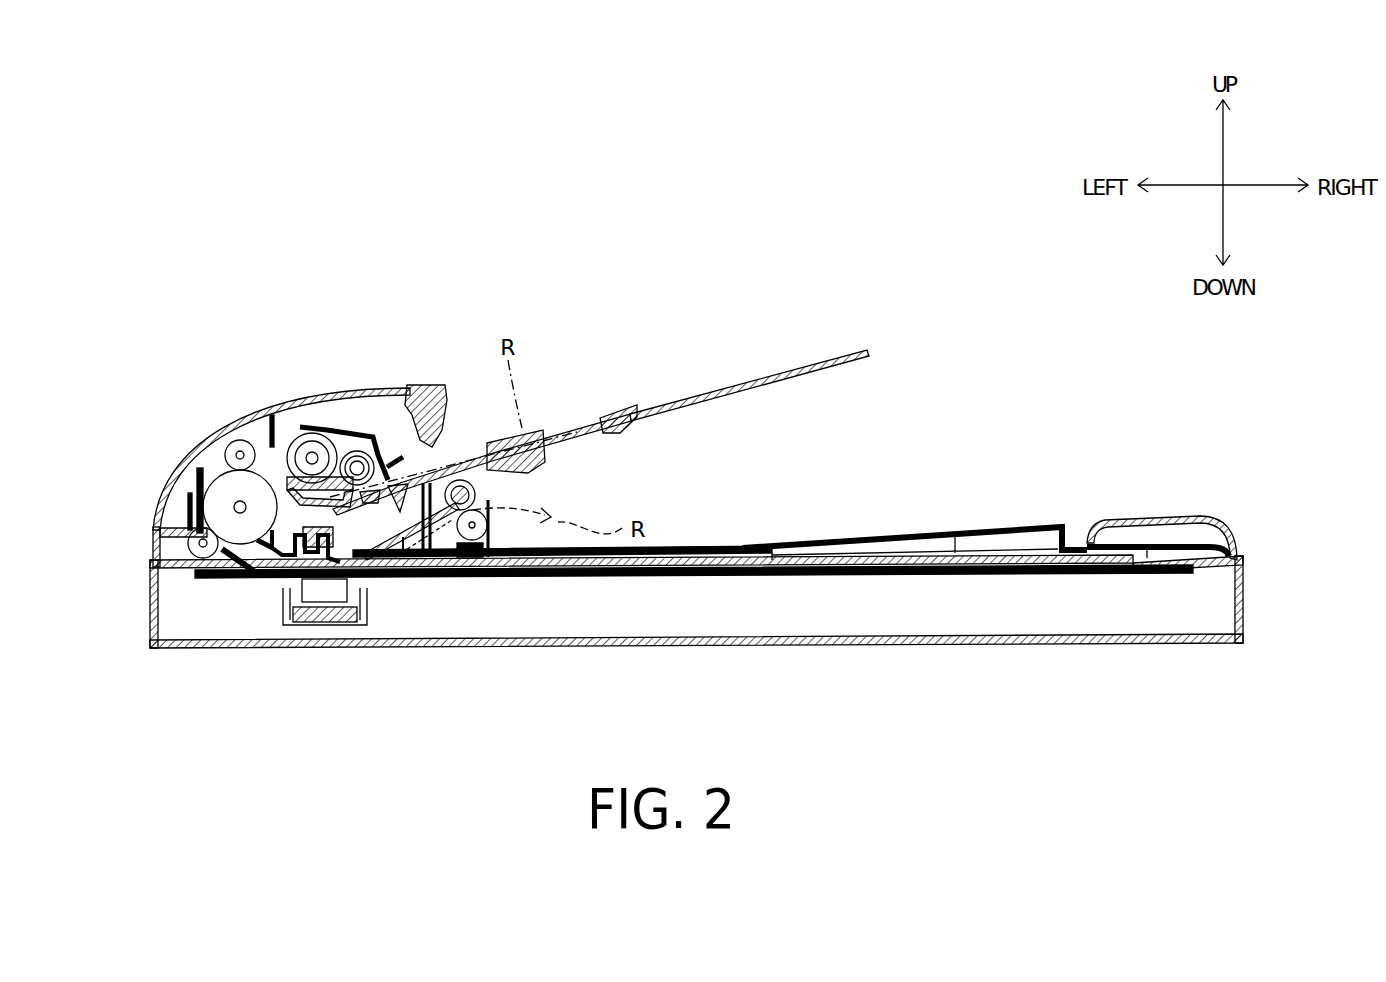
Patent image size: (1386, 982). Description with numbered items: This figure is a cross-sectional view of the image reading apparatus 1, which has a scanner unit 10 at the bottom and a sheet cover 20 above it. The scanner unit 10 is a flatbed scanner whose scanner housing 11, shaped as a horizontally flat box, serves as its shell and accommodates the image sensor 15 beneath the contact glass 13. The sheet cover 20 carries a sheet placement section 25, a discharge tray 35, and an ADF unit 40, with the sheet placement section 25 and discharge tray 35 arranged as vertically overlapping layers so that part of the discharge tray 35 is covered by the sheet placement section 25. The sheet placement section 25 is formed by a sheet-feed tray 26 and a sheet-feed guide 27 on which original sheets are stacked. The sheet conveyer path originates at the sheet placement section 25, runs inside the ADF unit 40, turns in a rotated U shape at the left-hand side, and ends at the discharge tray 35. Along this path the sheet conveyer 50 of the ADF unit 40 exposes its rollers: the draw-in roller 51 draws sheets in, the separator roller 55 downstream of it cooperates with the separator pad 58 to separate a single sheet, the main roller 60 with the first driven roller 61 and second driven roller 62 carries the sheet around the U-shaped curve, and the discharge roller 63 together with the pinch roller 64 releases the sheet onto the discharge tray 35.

The image reading apparatus 1 is at (984, 313).
The scanner unit 10 is at (168, 605).
The scanner housing 11 is at (1243, 606).
The contact glass 13 is at (240, 580).
The image sensor 15 is at (325, 603).
The sheet cover 20 is at (1237, 550).
The sheet placement section 25 is at (601, 400).
The sheet-feed tray 26 is at (734, 381).
The sheet-feed guide 27 is at (580, 424).
The discharge tray 35 is at (1040, 527).
The ADF unit 40 is at (353, 412).
The sheet conveyer 50 is at (265, 441).
The draw-in roller 51 is at (362, 448).
The separator roller 55 is at (313, 430).
The separator pad 58 is at (403, 580).
The main roller 60 is at (190, 480).
The first driven roller 61 is at (227, 444).
The second driven roller 62 is at (192, 547).
The discharge roller 63 is at (487, 488).
The pinch roller 64 is at (472, 560).